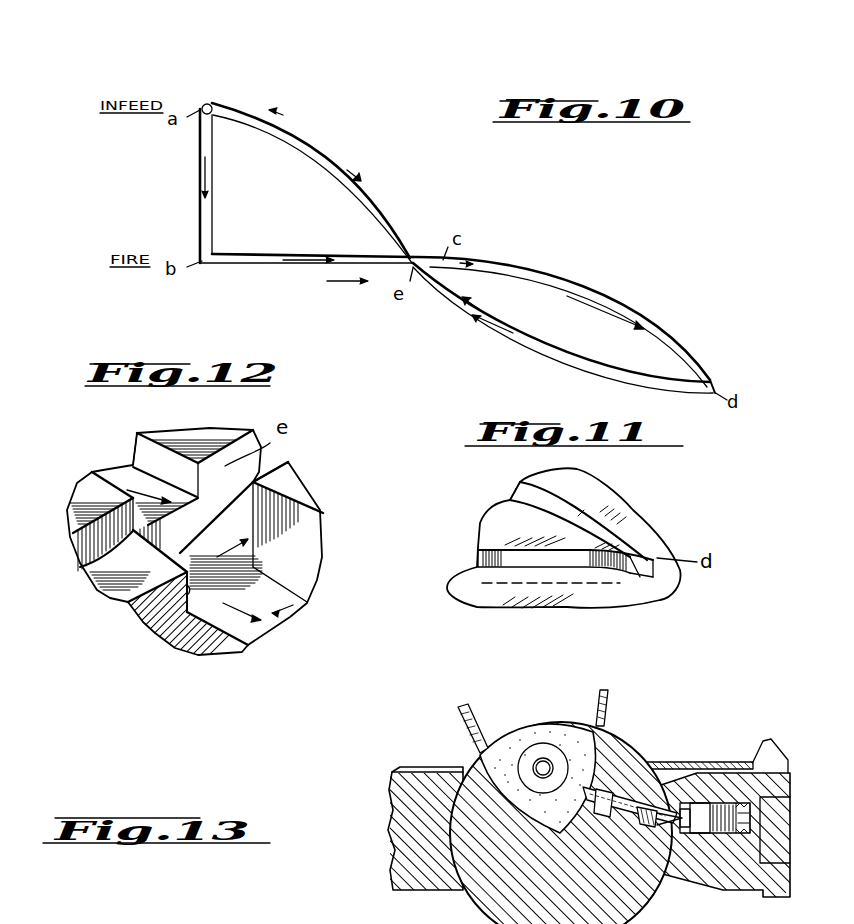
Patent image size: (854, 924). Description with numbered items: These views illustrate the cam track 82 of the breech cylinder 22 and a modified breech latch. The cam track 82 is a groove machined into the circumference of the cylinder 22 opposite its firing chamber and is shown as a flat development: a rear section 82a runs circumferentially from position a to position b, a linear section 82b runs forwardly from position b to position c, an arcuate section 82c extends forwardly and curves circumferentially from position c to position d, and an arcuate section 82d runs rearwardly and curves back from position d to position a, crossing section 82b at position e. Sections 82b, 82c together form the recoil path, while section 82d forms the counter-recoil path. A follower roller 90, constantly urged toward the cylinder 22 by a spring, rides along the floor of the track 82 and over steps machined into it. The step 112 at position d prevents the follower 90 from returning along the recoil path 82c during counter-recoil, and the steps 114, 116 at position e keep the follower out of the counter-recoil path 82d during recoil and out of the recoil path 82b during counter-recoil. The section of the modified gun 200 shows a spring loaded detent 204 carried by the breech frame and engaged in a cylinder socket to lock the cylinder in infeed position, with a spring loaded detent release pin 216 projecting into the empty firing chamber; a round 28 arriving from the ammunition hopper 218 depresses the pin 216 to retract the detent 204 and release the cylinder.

In FIG. 10, the follower roller 90 is at (210, 103).
In FIG. 10, the cam track 82 is at (521, 262).
In FIG. 12, the cam track 82 is at (297, 607).
In FIG. 11, the cam track 82 is at (513, 493).
In FIG. 10, the rear section of the cam track 82a is at (200, 190).
In FIG. 10, the linear section of the cam track 82b is at (290, 244).
In FIG. 12, the linear section of the cam track 82b is at (127, 480).
In FIG. 10, the arcuate section of the cam track 82c is at (637, 307).
In FIG. 11, the arcuate section of the cam track 82c is at (583, 510).
In FIG. 10, the arcuate section of the cam track 82d is at (450, 300).
In FIG. 12, the arcuate section of the cam track 82d is at (121, 594).
In FIG. 11, the arcuate section of the cam track 82d is at (478, 565).
In FIG. 10, the step 112 is at (716, 382).
In FIG. 11, the step 112 is at (623, 573).
In FIG. 12, the step 114 is at (80, 567).
In FIG. 12, the step 116 is at (158, 638).
In FIG. 11, the breech cylinder 22 is at (664, 545).
In FIG. 13, the modified open chamber gun 200 is at (452, 735).
In FIG. 13, the ammunition hopper 218 is at (592, 706).
In FIG. 13, the round of ammunition 28 is at (578, 757).
In FIG. 13, the detent release pin 216 is at (611, 792).
In FIG. 13, the spring loaded detent 204 is at (700, 808).